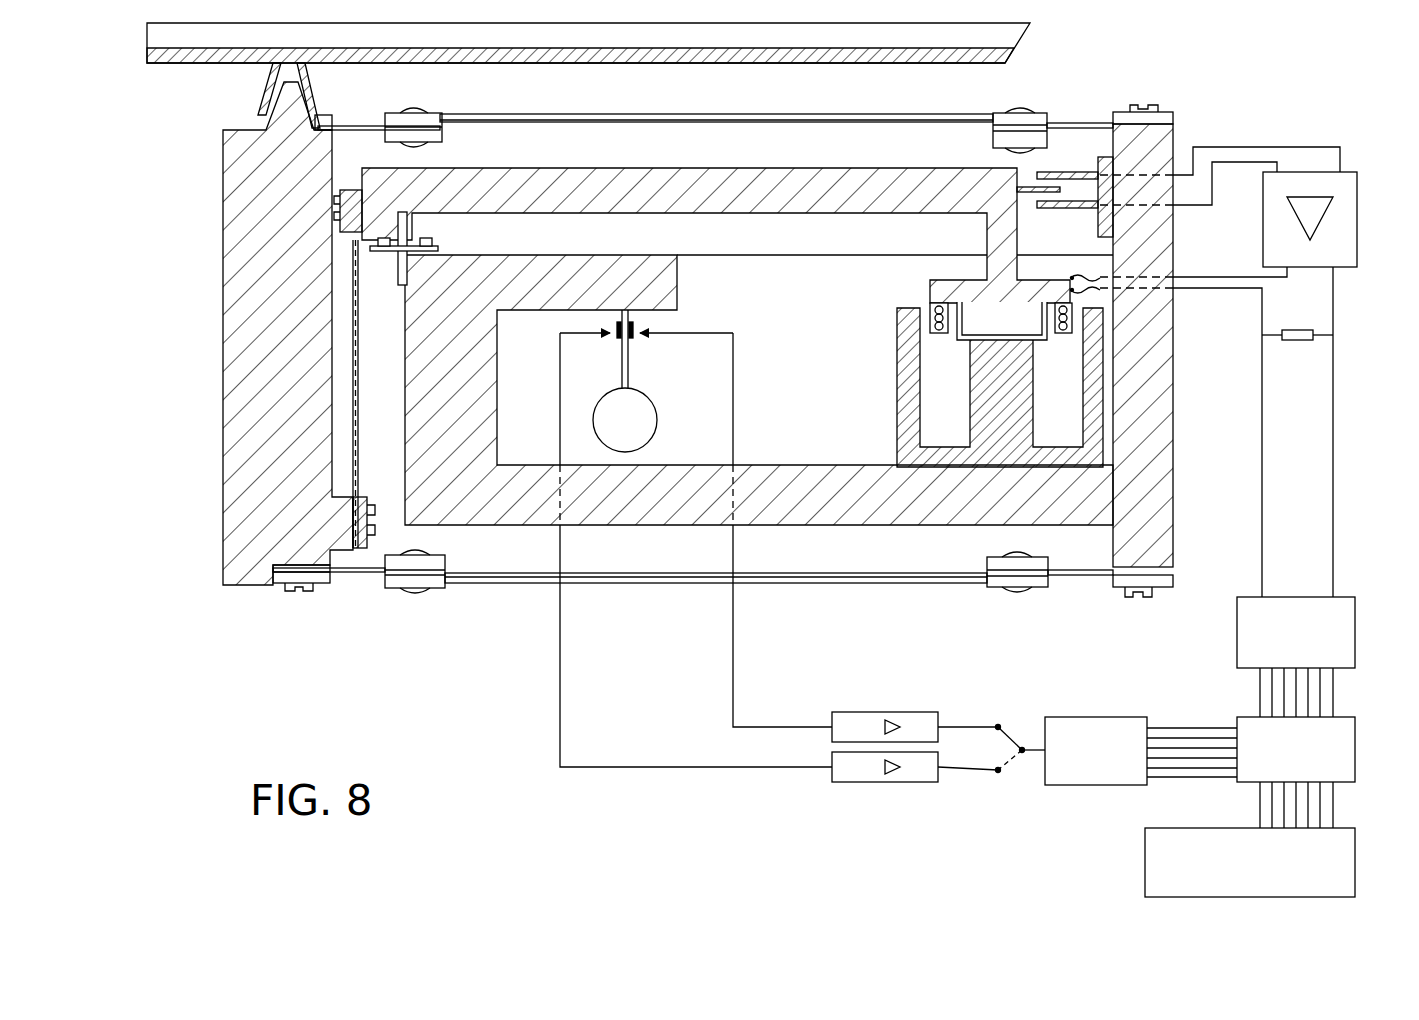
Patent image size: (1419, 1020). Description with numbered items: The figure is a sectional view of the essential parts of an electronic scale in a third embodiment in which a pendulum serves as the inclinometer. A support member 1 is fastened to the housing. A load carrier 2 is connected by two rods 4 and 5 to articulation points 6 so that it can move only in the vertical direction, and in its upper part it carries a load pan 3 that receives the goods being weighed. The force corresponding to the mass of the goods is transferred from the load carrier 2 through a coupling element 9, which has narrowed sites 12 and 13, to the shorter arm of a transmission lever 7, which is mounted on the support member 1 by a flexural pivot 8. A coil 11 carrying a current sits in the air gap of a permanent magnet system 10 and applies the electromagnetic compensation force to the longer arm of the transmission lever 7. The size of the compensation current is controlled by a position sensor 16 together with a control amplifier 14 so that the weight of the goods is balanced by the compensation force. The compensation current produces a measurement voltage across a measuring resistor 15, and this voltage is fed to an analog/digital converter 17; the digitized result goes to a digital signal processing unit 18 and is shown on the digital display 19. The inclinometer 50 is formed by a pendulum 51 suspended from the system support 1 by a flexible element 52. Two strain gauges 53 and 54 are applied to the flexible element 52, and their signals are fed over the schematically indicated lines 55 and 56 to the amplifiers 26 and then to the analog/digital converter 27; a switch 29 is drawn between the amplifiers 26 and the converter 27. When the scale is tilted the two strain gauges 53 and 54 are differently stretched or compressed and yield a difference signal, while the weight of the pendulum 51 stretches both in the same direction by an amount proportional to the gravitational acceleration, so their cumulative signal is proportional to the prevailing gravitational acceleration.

The support member 1 is at (490, 318).
The load carrier 2 is at (240, 372).
The load pan 3 is at (1028, 40).
The rod 4 is at (765, 118).
The rod 5 is at (520, 580).
The articulation points 6 is at (352, 125).
The transmission lever 7 is at (572, 175).
The flexural pivot 8 is at (388, 265).
The coupling element 9 is at (358, 372).
The permanent magnet system 10 is at (897, 428).
The coil 11 is at (928, 305).
The narrowed site 12 is at (350, 248).
The narrowed site 13 is at (358, 480).
The control amplifier 14 is at (1320, 183).
The measuring resistor 15 is at (1285, 348).
The position sensor 16 is at (1062, 170).
The analog/digital converter 17 is at (1247, 600).
The digital signal processing unit 18 is at (1250, 722).
The digital display 19 is at (1150, 860).
The amplifiers 26 is at (848, 760).
The analog/digital converter 27 is at (1075, 722).
The switch 29 is at (1012, 730).
The inclinometer 50 is at (760, 357).
The pendulum 51 is at (640, 430).
The flexible element 52 is at (628, 366).
The strain gauge 53 is at (635, 337).
The strain gauge 54 is at (615, 338).
The line 55 is at (730, 608).
The line 56 is at (567, 613).